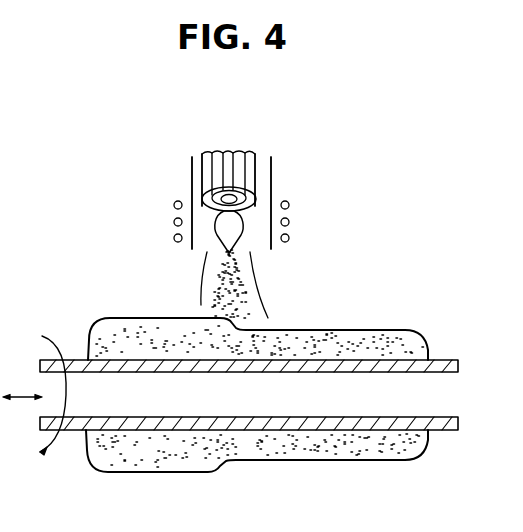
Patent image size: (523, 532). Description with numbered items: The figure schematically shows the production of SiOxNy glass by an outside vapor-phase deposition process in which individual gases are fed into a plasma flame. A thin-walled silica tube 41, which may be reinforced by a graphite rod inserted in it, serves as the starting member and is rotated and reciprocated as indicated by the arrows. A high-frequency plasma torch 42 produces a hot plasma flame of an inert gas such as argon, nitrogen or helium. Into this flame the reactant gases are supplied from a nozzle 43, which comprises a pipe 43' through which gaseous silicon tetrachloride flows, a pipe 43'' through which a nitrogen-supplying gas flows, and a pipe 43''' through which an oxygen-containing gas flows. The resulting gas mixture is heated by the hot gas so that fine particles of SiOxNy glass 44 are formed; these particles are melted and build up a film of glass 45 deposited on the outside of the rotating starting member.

The thin-walled silica tube 41 is at (448, 358).
The high-frequency plasma torch 42 is at (243, 222).
The nozzle 43 is at (261, 164).
The SiCl4 pipe 43' is at (228, 148).
The N-supply gas pipe 43'' is at (241, 162).
The oxygen-containing gas pipe 43''' is at (260, 201).
The fine particles of SiOxNy glass 44 is at (235, 285).
The film of glass 45 is at (333, 340).